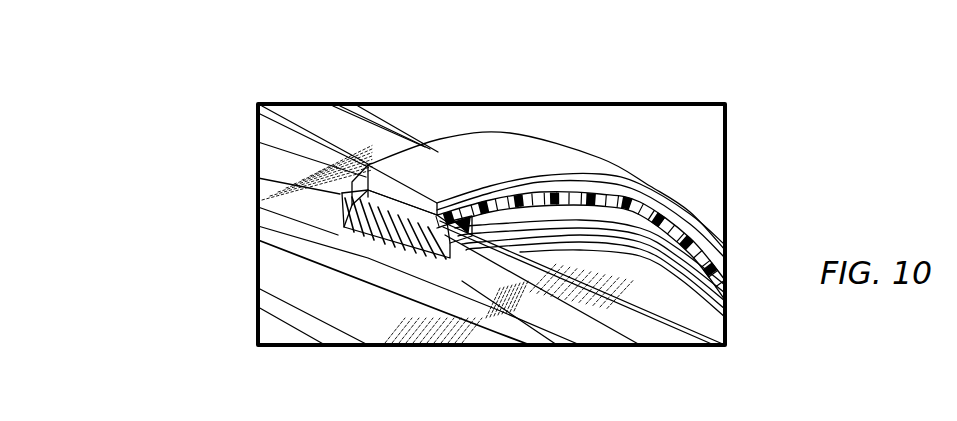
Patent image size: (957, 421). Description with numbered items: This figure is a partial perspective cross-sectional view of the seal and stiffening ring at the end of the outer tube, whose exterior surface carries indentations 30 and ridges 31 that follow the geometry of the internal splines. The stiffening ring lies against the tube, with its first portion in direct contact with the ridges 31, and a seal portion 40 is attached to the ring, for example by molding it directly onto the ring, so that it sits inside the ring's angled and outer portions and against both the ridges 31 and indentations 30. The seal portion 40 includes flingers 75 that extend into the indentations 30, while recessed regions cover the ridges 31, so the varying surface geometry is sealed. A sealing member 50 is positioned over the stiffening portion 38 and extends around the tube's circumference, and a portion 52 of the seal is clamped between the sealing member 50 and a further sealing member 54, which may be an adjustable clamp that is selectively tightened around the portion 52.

The sealing member 50 is at (307, 173).
The sealing member 54 is at (442, 150).
The portion of the seal 52 is at (463, 213).
The seal portion 40 is at (342, 225).
The flingers 75 is at (347, 242).
The stiffening ring 38 is at (360, 252).
The indentations 30 is at (526, 328).
The ridges 31 is at (622, 328).